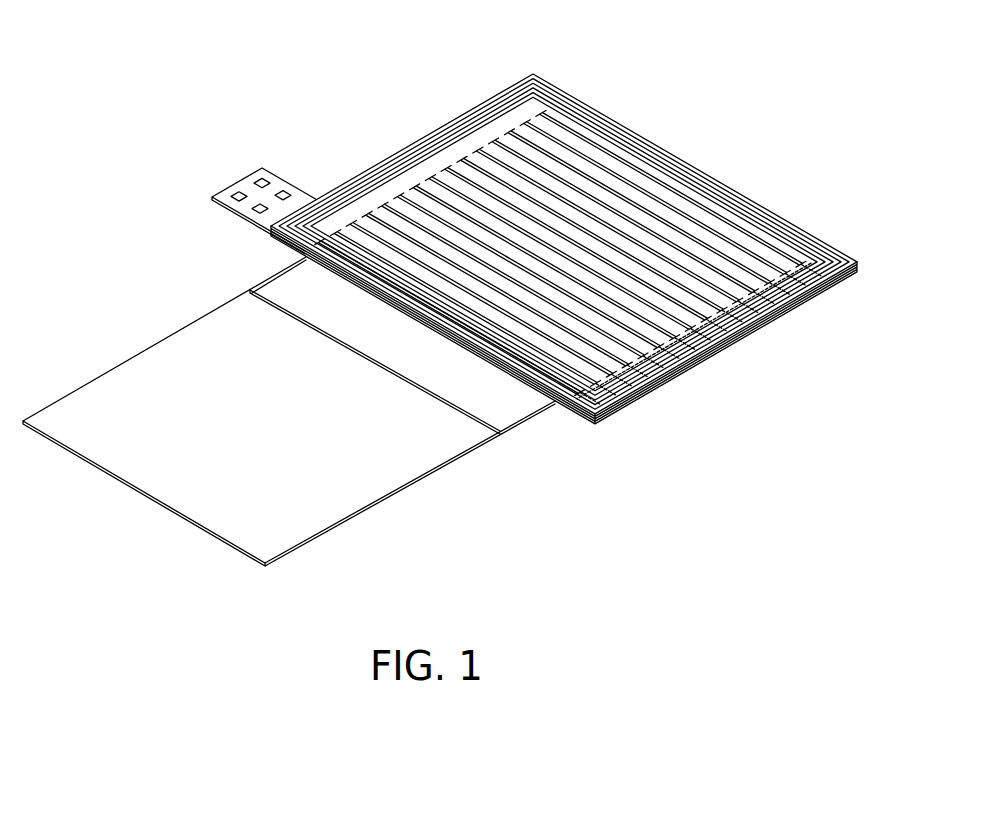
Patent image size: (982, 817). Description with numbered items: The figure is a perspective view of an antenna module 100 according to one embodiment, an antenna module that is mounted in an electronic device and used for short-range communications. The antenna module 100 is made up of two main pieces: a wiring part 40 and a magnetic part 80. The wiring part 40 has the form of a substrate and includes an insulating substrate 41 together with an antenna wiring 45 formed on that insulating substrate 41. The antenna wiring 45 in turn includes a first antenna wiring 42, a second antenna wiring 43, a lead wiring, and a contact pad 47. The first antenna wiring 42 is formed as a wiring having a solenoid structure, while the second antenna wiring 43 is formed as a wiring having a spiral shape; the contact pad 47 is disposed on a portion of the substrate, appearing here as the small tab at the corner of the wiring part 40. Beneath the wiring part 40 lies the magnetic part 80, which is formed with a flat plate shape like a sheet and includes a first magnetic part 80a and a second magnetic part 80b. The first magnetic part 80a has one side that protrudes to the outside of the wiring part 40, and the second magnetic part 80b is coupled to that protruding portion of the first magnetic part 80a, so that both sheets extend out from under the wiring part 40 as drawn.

The antenna module 100 is at (313, 33).
The wiring part 40 is at (844, 244).
The insulating substrate 41 is at (591, 140).
The first antenna wiring 42 is at (646, 173).
The second antenna wiring 43 is at (733, 192).
The antenna wiring 45 is at (750, 98).
The contact pad 47 is at (258, 182).
The magnetic part 80 is at (616, 464).
The first magnetic part 80a is at (489, 401).
The second magnetic part 80b is at (380, 460).